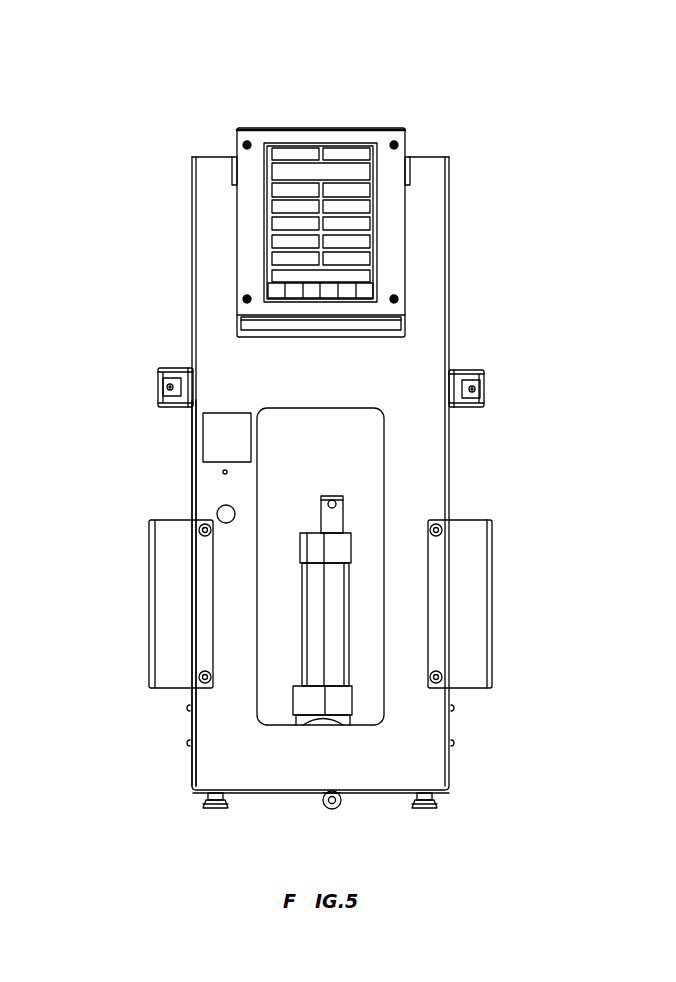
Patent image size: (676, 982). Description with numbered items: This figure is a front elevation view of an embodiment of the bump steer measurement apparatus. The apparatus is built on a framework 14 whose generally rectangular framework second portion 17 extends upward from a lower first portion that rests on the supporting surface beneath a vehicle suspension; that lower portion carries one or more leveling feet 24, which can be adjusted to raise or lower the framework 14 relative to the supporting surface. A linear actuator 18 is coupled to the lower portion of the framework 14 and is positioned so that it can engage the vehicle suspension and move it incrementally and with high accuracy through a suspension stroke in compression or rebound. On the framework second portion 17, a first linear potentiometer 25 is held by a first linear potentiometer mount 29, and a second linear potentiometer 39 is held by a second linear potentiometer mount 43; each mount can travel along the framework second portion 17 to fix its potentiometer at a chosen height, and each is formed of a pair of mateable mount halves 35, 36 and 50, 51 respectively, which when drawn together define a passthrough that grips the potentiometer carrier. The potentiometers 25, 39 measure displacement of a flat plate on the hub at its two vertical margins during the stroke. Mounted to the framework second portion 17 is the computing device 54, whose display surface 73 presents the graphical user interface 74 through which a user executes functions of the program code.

The framework 14 is at (466, 722).
The framework second portion 17 is at (430, 498).
The linear actuator 18 is at (318, 533).
The leveling feet 24 is at (206, 810).
The first linear potentiometer 25 is at (160, 389).
The first linear potentiometer mount 29 is at (153, 364).
The mateable mount half 35 is at (163, 406).
The mateable mount half 36 is at (185, 407).
The second linear potentiometer 39 is at (482, 389).
The second linear potentiometer mount 43 is at (496, 364).
The mateable mount half 50 is at (458, 410).
The mateable mount half 51 is at (482, 408).
The computing device 54 is at (334, 124).
The display surface 73 is at (364, 145).
The graphical user interface 74 is at (362, 173).